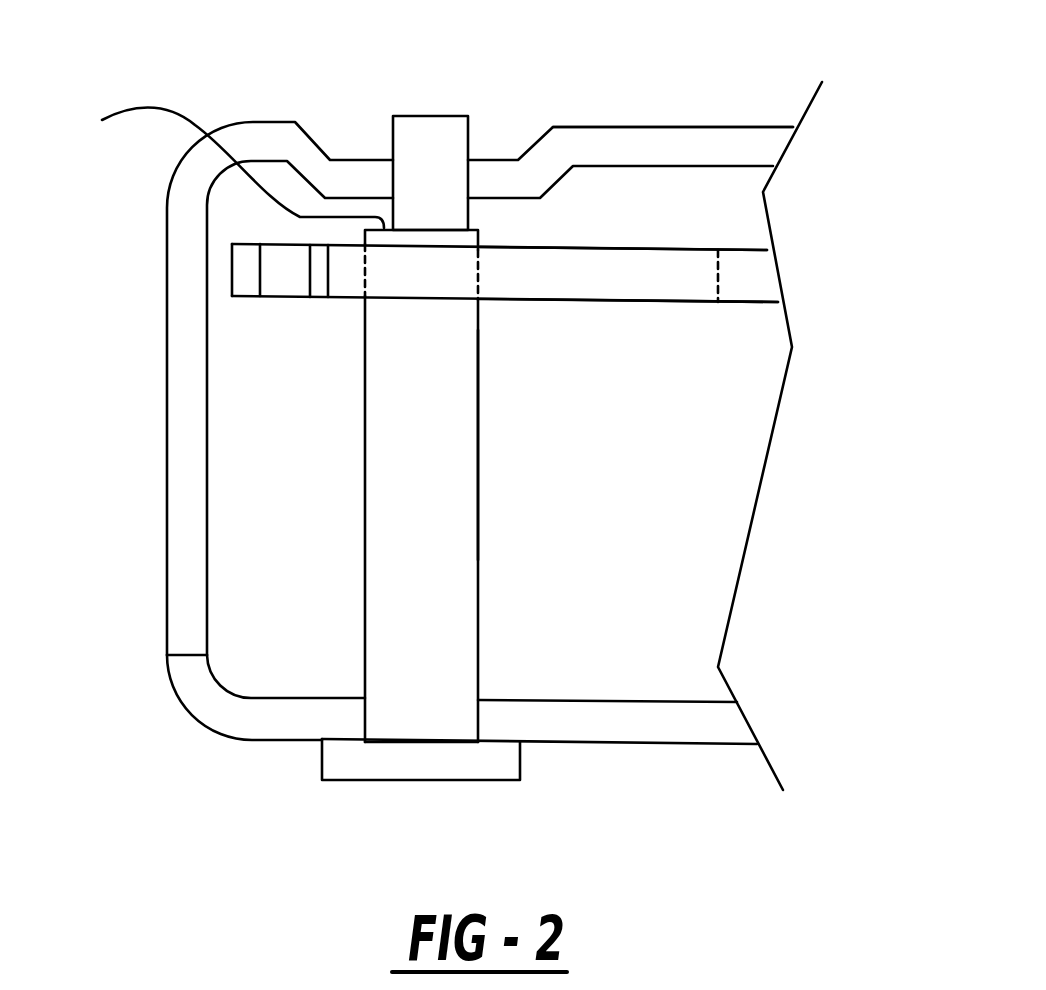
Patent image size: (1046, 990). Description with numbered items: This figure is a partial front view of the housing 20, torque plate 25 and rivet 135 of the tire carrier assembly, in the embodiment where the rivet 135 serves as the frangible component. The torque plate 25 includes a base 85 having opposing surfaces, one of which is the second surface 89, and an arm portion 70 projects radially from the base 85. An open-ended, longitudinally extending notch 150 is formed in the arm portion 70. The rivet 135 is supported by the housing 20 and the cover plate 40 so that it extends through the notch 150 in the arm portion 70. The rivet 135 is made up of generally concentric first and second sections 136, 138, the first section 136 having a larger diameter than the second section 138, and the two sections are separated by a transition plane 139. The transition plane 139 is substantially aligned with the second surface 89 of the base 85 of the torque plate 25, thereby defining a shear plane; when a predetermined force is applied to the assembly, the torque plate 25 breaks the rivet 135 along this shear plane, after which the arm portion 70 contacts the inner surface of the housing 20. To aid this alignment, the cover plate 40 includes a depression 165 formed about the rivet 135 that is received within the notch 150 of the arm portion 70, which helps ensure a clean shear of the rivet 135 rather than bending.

The housing 20 is at (617, 745).
The torque plate 25 is at (752, 269).
The cover plate 40 is at (683, 127).
The arm portion 70 is at (528, 278).
The base 85 is at (658, 303).
The second surface 89 is at (618, 248).
The rivet 135 is at (457, 512).
The first section 136 is at (478, 365).
The second section 138 is at (450, 140).
The transition plane 139 is at (214, 167).
The notch 150 is at (725, 282).
The depression 165 is at (362, 160).